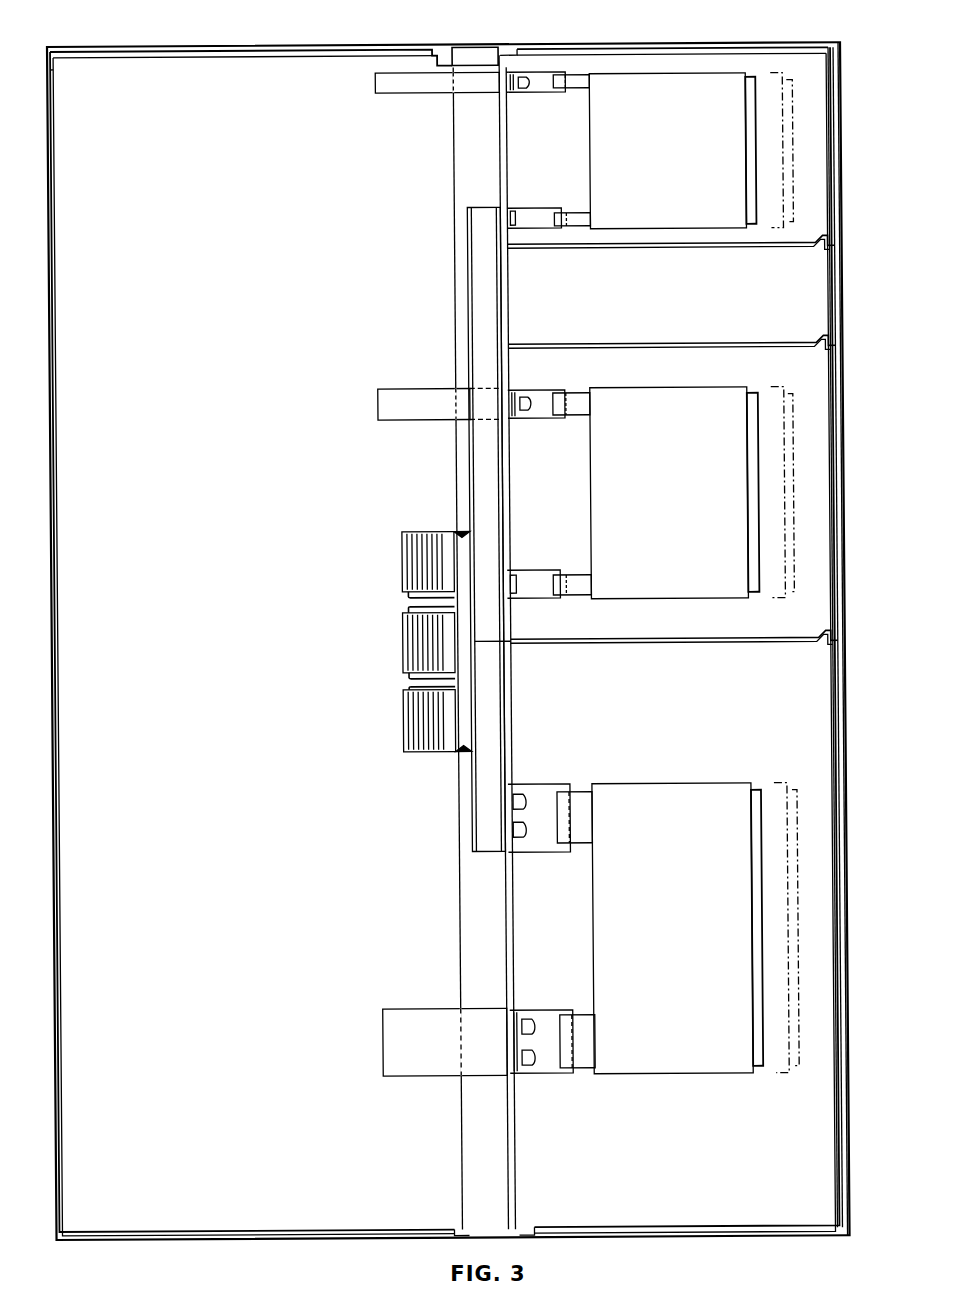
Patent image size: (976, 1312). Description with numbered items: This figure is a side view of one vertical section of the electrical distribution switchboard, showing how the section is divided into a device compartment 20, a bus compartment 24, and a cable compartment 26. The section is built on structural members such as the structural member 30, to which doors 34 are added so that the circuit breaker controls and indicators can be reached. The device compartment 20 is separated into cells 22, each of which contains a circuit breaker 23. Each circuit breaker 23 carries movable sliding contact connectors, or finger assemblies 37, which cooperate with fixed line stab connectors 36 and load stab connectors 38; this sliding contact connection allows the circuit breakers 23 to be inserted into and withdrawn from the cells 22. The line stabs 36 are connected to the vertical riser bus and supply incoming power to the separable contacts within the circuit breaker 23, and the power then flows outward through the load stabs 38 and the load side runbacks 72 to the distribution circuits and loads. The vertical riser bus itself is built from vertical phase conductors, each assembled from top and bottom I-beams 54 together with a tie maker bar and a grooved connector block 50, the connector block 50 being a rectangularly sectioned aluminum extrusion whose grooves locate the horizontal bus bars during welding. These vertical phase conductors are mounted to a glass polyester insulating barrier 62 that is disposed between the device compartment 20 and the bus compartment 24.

The device compartment 20 is at (680, 62).
The cells 22 is at (820, 152).
The circuit breakers 23 is at (685, 233).
The bus compartment 24 is at (473, 60).
The cable compartment 26 is at (147, 77).
The structural member 30 is at (190, 47).
The doors 34 is at (843, 88).
The line stab connectors 36 is at (537, 211).
The finger assemblies 37 is at (575, 82).
The load stab connectors 38 is at (535, 96).
The connector block 50 is at (398, 575).
The I-beams 54 is at (480, 336).
The insulating barrier 62 is at (499, 140).
The load side runbacks 72 is at (403, 96).